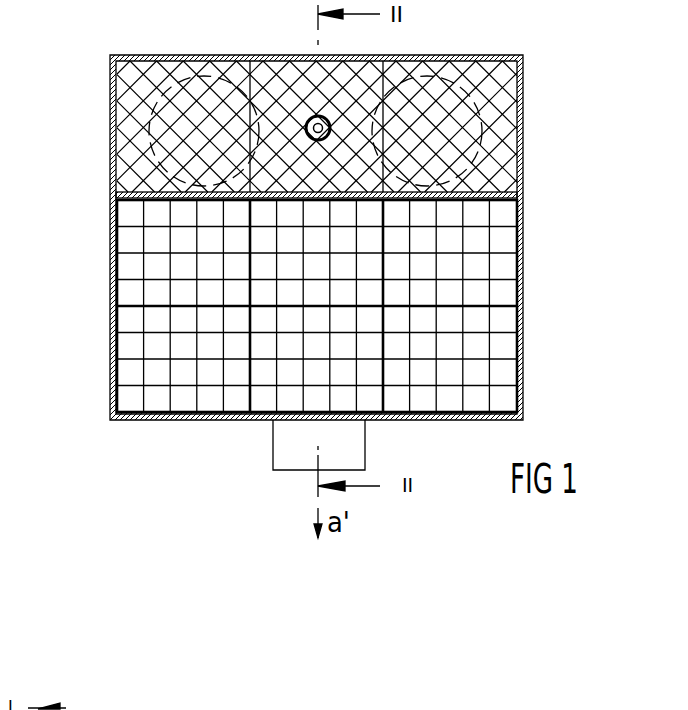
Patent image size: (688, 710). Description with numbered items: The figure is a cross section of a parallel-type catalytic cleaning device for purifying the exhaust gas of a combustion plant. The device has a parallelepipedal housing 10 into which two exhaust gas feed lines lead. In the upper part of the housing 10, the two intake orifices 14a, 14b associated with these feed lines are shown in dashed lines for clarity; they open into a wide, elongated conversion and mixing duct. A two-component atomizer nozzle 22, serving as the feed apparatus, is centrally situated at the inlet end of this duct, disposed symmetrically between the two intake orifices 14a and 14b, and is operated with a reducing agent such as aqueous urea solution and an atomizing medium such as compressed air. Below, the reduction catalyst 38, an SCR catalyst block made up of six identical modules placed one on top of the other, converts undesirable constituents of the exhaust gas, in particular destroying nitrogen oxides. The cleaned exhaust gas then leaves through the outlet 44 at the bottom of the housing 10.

The housing 10 is at (110, 129).
The intake orifice 14a is at (202, 77).
The intake orifice 14b is at (431, 77).
The two-component atomizer nozzle 22 is at (313, 117).
The reduction catalyst 38 is at (153, 264).
The outlet 44 is at (273, 457).